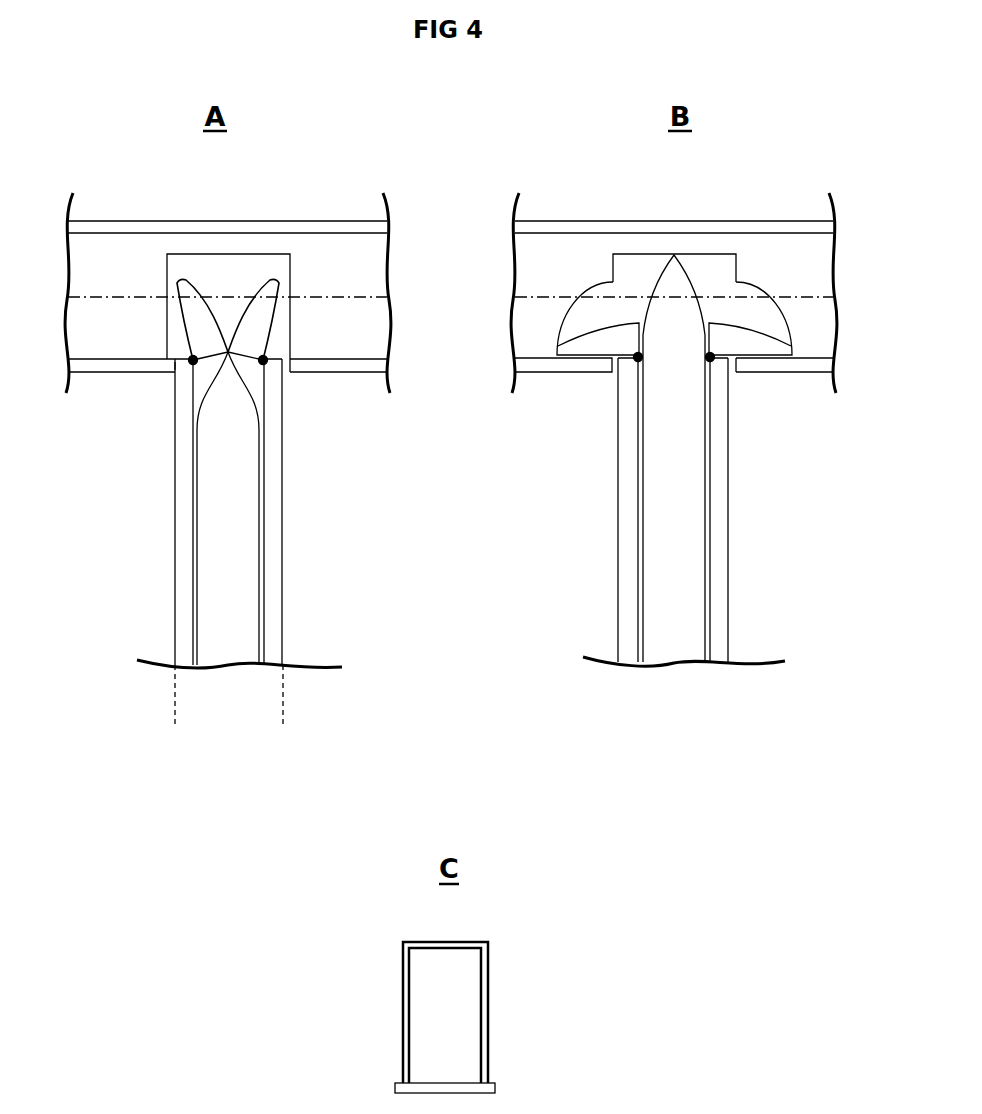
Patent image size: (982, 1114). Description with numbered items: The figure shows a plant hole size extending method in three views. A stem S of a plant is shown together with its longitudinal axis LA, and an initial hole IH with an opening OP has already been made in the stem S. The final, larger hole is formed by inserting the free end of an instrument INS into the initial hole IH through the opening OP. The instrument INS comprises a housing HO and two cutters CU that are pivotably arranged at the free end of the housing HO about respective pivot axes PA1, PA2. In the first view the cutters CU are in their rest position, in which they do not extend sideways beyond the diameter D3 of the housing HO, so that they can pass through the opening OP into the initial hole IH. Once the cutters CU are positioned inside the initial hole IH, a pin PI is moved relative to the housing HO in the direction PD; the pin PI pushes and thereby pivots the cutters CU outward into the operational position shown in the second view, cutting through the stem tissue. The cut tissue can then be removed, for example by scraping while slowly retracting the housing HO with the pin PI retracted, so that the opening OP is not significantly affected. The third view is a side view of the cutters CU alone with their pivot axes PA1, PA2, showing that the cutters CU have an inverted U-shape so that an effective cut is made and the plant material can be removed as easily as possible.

In FIG. 4A, the stem S is at (160, 221).
In FIG. 4B, the stem S is at (712, 221).
In FIG. 4A, the initial hole IH is at (235, 277).
In FIG. 4A, the longitudinal axis LA is at (335, 297).
In FIG. 4B, the longitudinal axis LA is at (802, 295).
In FIG. 4A, the cutters CU is at (250, 323).
In FIG. 4B, the cutters CU is at (613, 337).
In FIG. 4C, the cutters CU is at (488, 1005).
In FIG. 4A, the pivot axis PA1 is at (190, 359).
In FIG. 4B, the pivot axis PA1 is at (637, 360).
In FIG. 4C, the pivot axis PA1 is at (496, 1080).
In FIG. 4A, the pivot axis PA2 is at (265, 358).
In FIG. 4B, the pivot axis PA2 is at (711, 359).
In FIG. 4C, the pivot axis PA2 is at (493, 1088).
In FIG. 4A, the opening OP is at (172, 375).
In FIG. 4A, the housing HO is at (276, 506).
In FIG. 4B, the housing HO is at (728, 497).
In FIG. 4A, the instrument INS is at (175, 548).
In FIG. 4B, the instrument INS is at (619, 573).
In FIG. 4A, the pin PI is at (246, 584).
In FIG. 4B, the pin PI is at (682, 540).
In FIG. 4A, the diameter D3 is at (177, 706).
In FIG. 4A, the direction PD is at (228, 739).
In FIG. 4B, the direction PD is at (678, 710).